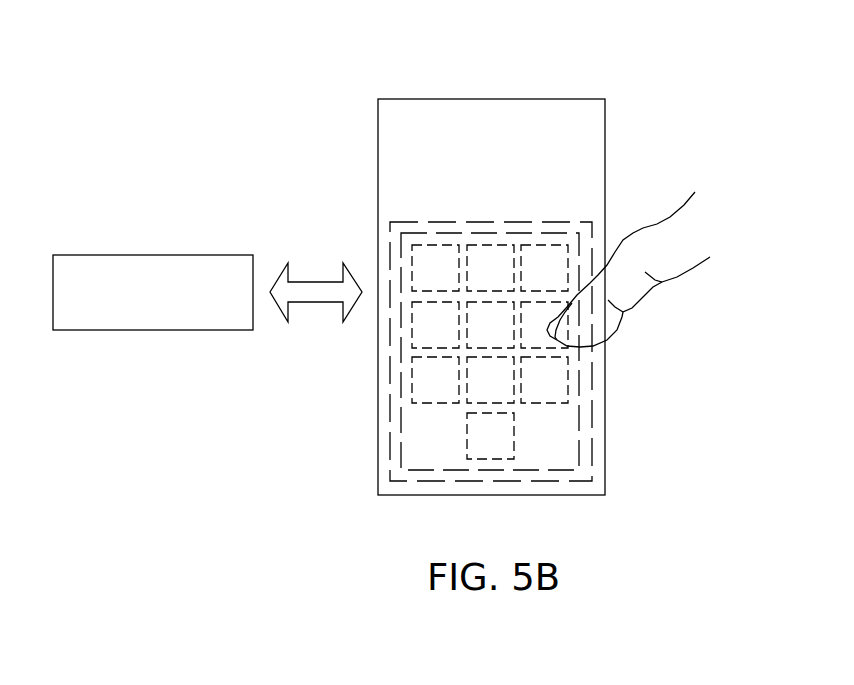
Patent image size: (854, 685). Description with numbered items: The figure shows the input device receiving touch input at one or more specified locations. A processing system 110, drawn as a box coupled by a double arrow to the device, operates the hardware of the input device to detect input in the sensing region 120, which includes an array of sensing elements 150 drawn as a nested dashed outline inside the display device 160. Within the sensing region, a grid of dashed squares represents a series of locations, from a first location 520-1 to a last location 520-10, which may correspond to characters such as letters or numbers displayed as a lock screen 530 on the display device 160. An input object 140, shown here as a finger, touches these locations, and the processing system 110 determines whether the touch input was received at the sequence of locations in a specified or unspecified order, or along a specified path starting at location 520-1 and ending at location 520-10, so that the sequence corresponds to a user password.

The processing system 110 is at (112, 255).
The sensing region 120 is at (413, 220).
The input object 140 is at (672, 217).
The sensing elements 150 is at (402, 262).
The display device 160 is at (505, 99).
The location 520-1 is at (437, 245).
The location 520-10 is at (513, 440).
The lock screen 530 is at (412, 428).